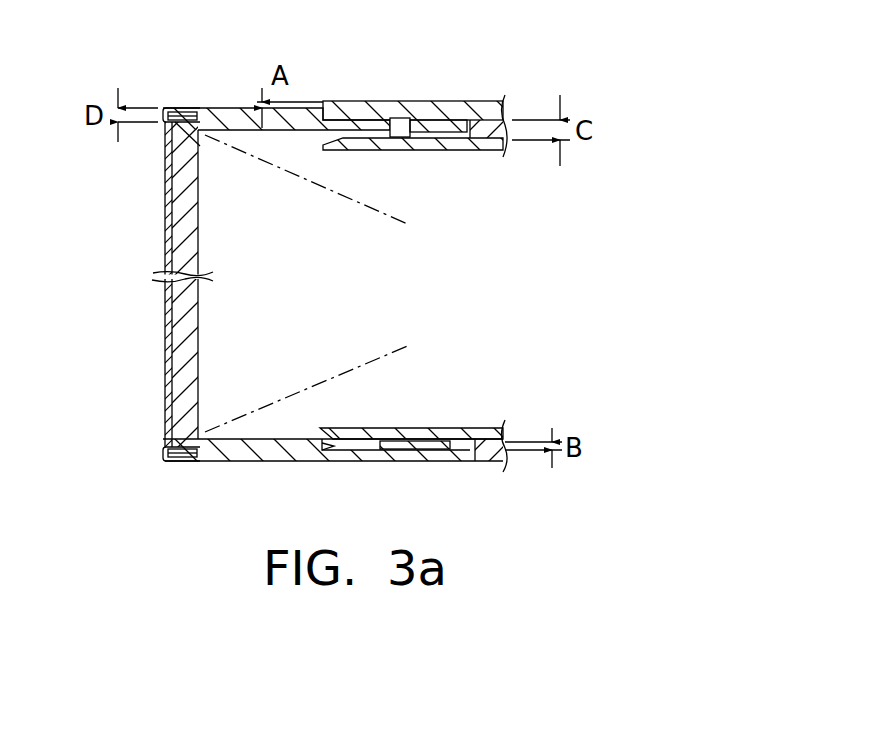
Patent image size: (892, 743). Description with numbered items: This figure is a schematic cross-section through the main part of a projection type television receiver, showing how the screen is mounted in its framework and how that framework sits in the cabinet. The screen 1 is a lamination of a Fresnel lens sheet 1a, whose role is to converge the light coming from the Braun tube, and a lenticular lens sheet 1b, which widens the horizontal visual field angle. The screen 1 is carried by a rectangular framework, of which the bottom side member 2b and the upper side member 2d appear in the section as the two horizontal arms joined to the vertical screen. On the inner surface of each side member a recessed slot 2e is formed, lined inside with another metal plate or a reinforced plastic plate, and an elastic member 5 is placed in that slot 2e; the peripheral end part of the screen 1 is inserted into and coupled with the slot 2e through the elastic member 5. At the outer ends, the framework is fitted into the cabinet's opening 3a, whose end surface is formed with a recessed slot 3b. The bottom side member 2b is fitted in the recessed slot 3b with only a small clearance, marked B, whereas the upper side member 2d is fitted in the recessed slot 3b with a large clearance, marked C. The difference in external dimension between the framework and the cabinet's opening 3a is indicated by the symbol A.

The screen 1 is at (76, 285).
The Fresnel lens sheet 1a is at (183, 349).
The lenticular lens sheet 1b is at (168, 318).
The bottom side member 2b is at (260, 438).
The upper side member 2d is at (236, 107).
The recessed slot 2e is at (178, 109).
The cabinet's opening 3a is at (488, 101).
The recessed slot 3b is at (467, 133).
The elastic member 5 is at (195, 112).